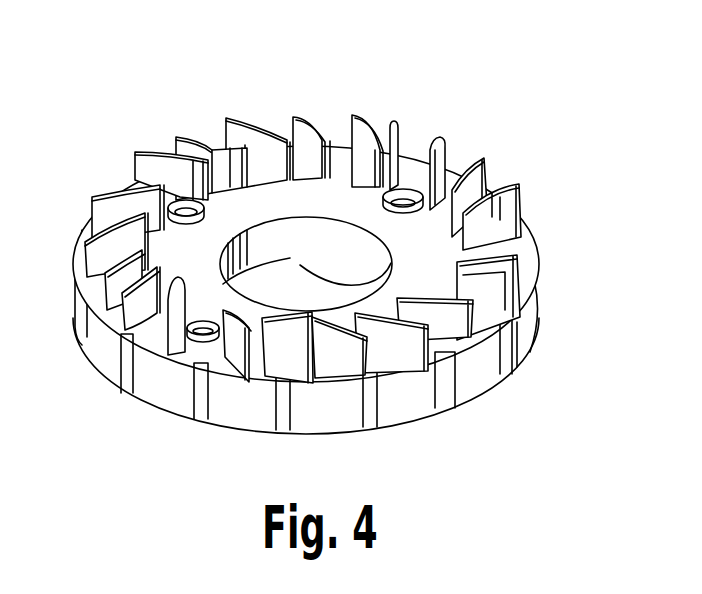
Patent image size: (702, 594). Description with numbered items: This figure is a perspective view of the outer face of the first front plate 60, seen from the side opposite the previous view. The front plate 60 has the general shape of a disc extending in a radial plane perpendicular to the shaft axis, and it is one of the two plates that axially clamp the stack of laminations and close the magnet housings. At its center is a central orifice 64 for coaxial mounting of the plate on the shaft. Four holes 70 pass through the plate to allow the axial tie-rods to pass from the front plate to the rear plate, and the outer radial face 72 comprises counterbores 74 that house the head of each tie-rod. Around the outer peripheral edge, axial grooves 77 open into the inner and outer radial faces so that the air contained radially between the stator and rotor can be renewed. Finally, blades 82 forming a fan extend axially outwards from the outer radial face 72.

The first front plate 60 is at (501, 105).
The central orifice 64 is at (329, 243).
The holes 70 is at (173, 187).
The outer radial face 72 is at (341, 200).
The counterbores 74 is at (190, 150).
The axial grooves 77 is at (539, 335).
The blades 82 is at (512, 203).